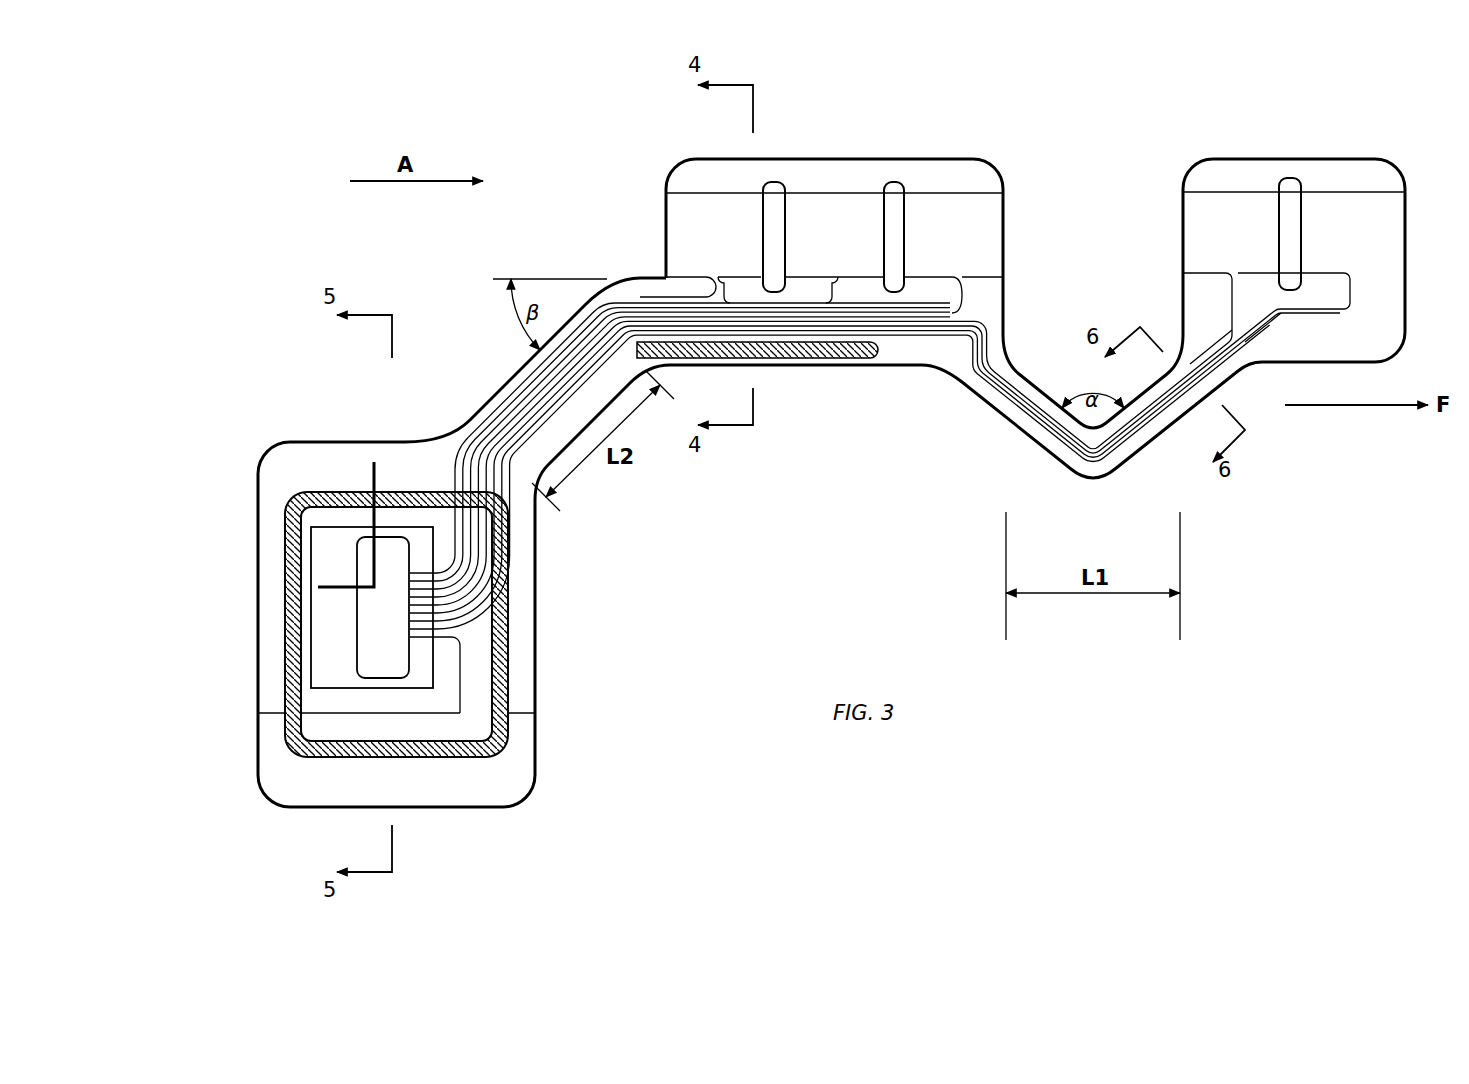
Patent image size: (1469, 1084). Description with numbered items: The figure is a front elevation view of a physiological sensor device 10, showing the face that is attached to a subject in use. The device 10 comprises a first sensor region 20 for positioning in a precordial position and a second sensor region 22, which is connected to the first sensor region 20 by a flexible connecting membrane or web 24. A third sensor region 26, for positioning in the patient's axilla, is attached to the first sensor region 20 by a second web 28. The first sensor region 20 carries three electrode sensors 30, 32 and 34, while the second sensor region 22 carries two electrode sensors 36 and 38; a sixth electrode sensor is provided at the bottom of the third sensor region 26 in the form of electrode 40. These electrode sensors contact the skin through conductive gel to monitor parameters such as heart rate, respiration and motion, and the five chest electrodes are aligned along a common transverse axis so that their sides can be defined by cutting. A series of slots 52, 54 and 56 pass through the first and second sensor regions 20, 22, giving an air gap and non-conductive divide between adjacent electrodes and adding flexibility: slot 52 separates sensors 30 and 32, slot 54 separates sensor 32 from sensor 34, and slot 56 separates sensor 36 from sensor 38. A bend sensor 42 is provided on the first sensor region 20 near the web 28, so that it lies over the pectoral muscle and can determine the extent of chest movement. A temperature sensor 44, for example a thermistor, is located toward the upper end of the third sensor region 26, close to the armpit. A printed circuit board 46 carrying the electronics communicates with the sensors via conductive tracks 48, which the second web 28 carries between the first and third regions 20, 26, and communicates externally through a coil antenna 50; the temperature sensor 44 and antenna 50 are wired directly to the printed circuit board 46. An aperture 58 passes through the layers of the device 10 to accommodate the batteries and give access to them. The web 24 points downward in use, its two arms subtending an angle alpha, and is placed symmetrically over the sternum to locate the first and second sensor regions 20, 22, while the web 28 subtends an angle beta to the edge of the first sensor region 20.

The physiological sensor device 10 is at (1058, 148).
The first sensor region 20 is at (722, 157).
The second sensor region 22 is at (1322, 157).
The flexible connecting web 24 is at (1130, 457).
The third sensor region 26 is at (347, 440).
The second web 28 is at (502, 388).
The electrode sensor 30 is at (694, 233).
The electrode sensor 32 is at (834, 222).
The electrode sensor 34 is at (986, 214).
The electrode sensor 36 is at (1200, 227).
The electrode sensor 38 is at (1388, 207).
The electrode 40 is at (510, 773).
The bend sensor 42 is at (786, 358).
The temperature sensor 44 is at (376, 457).
The printed circuit board 46 is at (333, 617).
The conductive tracks 48 is at (1050, 428).
The coil antenna 50 is at (507, 637).
The slot 52 is at (773, 180).
The slot 54 is at (895, 180).
The slot 56 is at (1290, 185).
The aperture 58 is at (380, 650).